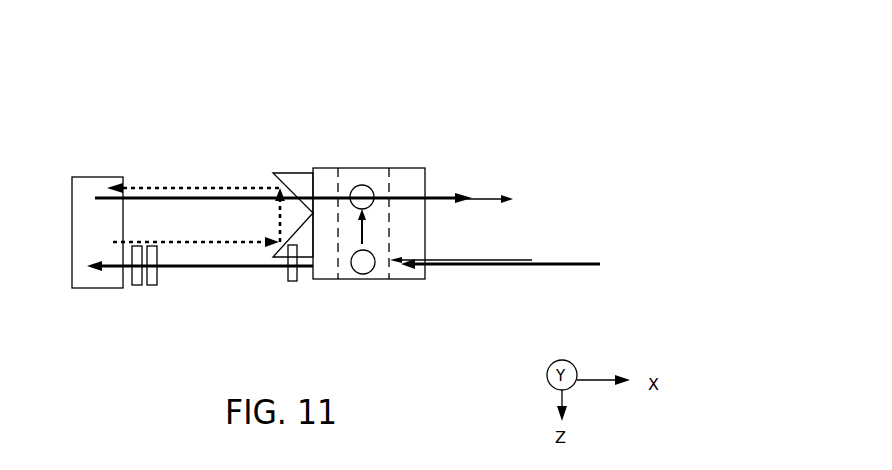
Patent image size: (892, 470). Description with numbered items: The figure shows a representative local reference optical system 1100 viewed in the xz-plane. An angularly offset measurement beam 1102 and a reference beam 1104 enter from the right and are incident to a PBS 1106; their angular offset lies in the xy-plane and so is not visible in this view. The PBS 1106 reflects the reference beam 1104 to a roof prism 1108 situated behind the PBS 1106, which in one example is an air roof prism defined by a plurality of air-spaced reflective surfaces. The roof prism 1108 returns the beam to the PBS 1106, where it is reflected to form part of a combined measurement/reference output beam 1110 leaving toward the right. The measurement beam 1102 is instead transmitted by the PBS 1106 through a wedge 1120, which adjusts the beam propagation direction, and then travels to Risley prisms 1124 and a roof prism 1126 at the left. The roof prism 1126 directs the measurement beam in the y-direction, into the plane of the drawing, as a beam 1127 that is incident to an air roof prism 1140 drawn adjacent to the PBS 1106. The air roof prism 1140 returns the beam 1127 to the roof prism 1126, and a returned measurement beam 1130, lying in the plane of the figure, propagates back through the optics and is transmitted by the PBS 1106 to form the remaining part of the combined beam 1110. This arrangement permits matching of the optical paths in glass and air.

The local reference optical system 1100 is at (575, 72).
The measurement beam 1102 is at (577, 265).
The reference beam 1104 is at (532, 259).
The PBS 1106 is at (412, 173).
The roof prism 1108 is at (337, 183).
The combined measurement/reference output beam 1110 is at (511, 173).
The wedge 1120 is at (293, 282).
The Risley prisms 1124 is at (140, 286).
The roof prism 1126 is at (122, 227).
The beam 1127 is at (210, 187).
The returned measurement beam 1130 is at (145, 200).
The air roof prism 1140 is at (295, 172).